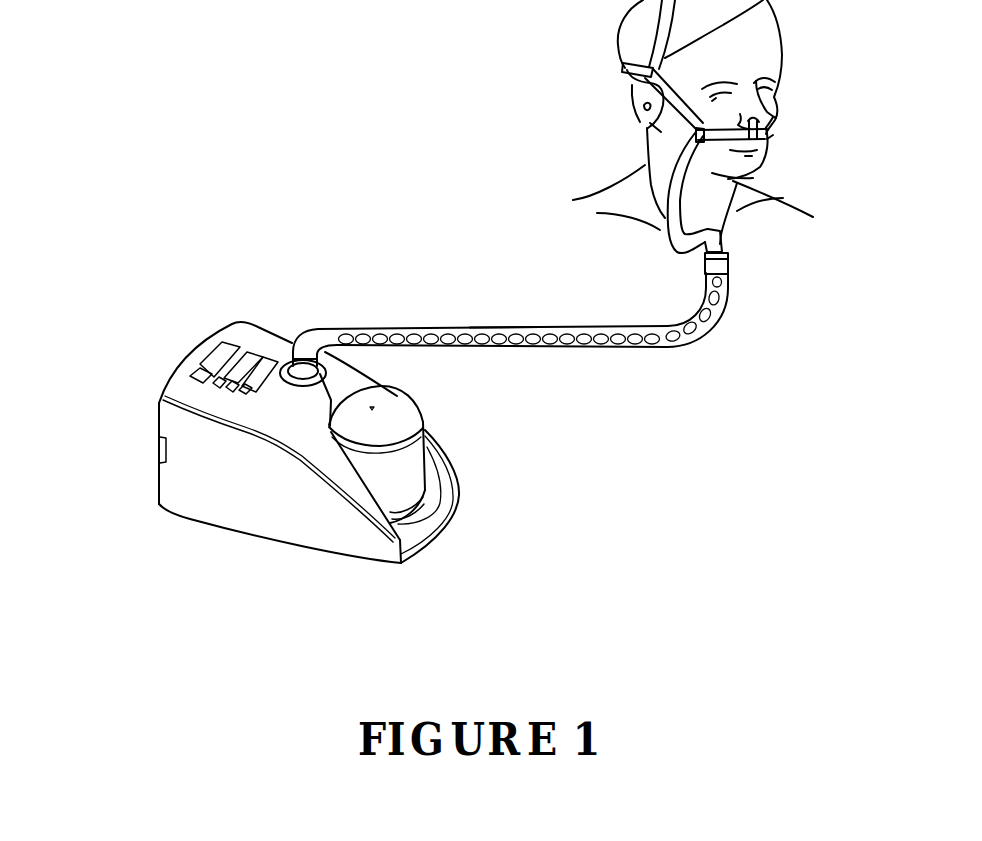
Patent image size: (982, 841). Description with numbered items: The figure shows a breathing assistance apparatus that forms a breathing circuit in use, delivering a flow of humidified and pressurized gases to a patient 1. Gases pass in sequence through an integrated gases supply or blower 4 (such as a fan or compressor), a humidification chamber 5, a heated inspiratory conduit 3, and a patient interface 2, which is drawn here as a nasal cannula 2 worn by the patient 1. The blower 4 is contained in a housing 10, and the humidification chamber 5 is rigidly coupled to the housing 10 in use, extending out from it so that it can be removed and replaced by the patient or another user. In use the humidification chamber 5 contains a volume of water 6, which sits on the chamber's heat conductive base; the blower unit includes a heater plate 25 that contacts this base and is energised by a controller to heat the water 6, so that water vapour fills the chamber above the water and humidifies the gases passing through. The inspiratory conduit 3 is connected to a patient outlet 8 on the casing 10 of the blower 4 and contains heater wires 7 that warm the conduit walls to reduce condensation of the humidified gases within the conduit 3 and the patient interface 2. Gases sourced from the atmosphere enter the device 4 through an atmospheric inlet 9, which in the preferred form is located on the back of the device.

The patient 1 is at (672, 134).
The patient interface 2 is at (773, 134).
The inspiratory conduit 3 is at (601, 347).
The blower 4 is at (194, 306).
The humidification chamber 5 is at (410, 425).
The water 6 is at (435, 512).
The heater wires 7 is at (505, 328).
The patient outlet 8 is at (293, 350).
The atmospheric inlet 9 is at (144, 452).
The housing 10 is at (232, 516).
The heater plate 25 is at (408, 522).